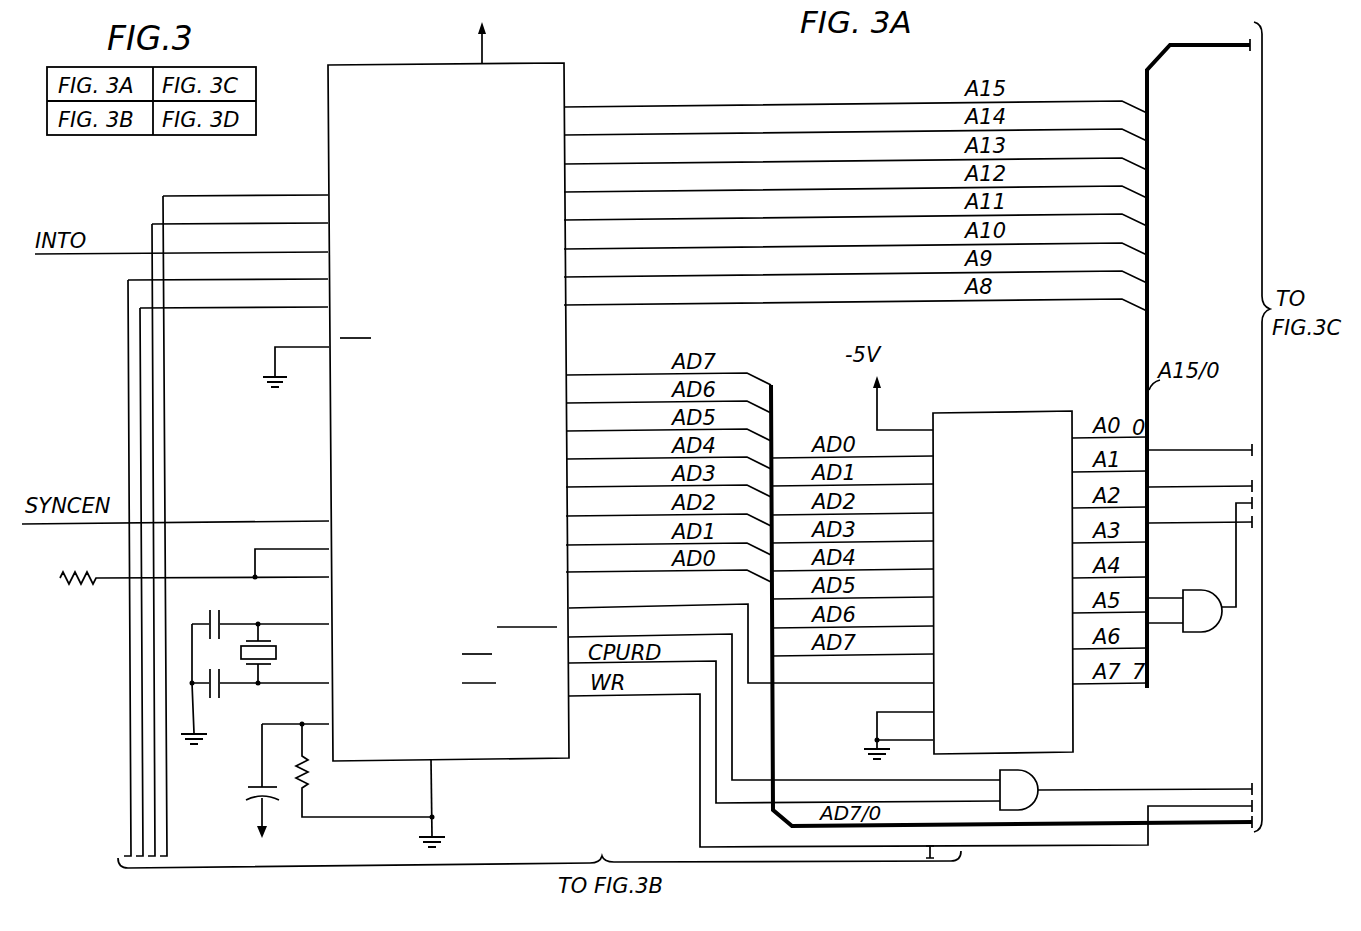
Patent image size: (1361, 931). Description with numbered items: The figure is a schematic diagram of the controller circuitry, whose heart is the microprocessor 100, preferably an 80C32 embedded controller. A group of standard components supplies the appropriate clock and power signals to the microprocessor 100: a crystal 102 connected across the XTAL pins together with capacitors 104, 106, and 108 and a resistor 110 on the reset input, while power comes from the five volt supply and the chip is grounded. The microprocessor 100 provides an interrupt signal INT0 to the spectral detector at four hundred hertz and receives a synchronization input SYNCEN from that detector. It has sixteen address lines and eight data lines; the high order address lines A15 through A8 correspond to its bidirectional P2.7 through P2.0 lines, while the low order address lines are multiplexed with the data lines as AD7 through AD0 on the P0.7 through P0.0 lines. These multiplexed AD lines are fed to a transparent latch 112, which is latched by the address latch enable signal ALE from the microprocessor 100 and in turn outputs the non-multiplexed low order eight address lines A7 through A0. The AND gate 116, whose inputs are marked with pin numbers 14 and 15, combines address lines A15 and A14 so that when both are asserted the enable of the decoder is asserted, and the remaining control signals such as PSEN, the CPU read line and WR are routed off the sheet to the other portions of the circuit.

The microprocessor 100 is at (550, 63).
The crystal 102 is at (277, 653).
The capacitor 104 is at (220, 622).
The capacitor 106 is at (220, 691).
The capacitor 108 is at (247, 801).
The resistor 110 is at (308, 781).
The transparent latch 112 is at (1010, 413).
The AND gate 116 is at (1204, 633).
The AND gate input line 14 is at (1166, 637).
The AND gate input line 15 is at (1166, 585).